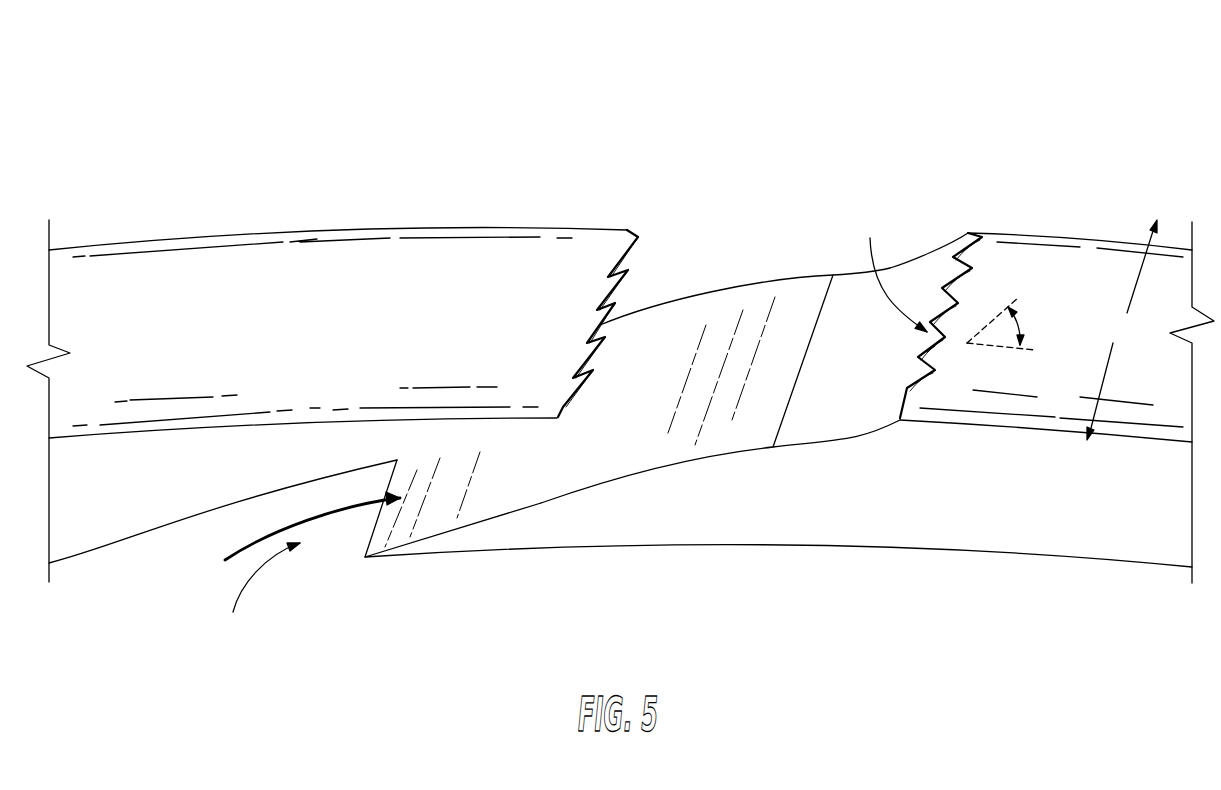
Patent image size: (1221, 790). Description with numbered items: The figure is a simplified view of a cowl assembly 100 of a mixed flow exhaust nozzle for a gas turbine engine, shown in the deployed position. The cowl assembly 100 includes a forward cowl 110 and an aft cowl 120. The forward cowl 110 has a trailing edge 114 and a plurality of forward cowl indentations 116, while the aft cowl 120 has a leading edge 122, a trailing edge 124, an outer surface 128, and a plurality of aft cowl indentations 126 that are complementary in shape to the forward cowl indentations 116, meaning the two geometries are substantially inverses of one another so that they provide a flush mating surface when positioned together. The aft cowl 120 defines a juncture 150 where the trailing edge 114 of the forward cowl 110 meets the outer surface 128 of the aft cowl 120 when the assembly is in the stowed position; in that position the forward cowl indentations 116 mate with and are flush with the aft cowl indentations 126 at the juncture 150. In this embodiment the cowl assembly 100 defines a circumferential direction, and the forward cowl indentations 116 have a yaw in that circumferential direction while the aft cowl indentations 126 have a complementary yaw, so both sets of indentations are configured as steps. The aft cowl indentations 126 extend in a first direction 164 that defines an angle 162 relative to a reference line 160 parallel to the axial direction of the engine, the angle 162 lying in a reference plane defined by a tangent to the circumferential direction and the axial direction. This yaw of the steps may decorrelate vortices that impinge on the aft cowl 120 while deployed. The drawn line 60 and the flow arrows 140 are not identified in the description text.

The cowl assembly 100 is at (842, 78).
The forward cowl 110 is at (288, 232).
The trailing edge 114 is at (623, 233).
The forward cowl indentations 116 is at (593, 352).
The aft cowl 120 is at (923, 548).
The leading edge 122 is at (397, 523).
The trailing edge 124 is at (925, 272).
The aft cowl indentations 126 is at (935, 378).
The outer surface 128 is at (727, 310).
The bond line 60 is at (823, 300).
The fluid flow direction 140 is at (310, 572).
The juncture 150 is at (891, 267).
The reference line 160 is at (987, 348).
The angle 162 is at (1023, 323).
The first direction 164 is at (995, 317).